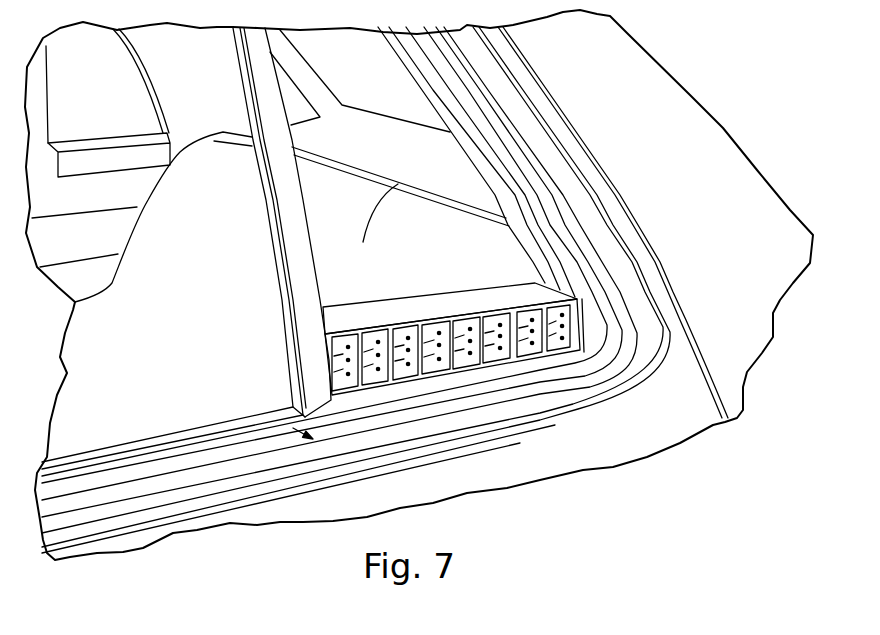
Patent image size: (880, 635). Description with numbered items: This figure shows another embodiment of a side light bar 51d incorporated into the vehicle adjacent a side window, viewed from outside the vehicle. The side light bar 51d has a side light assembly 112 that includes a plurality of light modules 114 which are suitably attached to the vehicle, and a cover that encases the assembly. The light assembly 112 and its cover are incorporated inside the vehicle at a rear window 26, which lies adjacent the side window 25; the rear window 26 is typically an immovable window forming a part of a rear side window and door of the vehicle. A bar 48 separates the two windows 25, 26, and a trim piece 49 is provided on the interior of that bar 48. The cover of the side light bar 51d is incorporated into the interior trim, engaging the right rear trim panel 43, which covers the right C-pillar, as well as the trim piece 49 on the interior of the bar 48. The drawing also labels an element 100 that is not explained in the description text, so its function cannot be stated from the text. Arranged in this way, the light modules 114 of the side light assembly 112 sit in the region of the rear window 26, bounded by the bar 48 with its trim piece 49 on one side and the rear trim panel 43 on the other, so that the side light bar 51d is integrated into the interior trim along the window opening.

The side window 25 is at (102, 317).
The rear window 26 is at (70, 59).
The right rear trim panel 43 is at (212, 83).
The bar 48 is at (300, 268).
The trim piece 49 is at (285, 328).
The side light bar 51d is at (451, 255).
The power strip assembly 100 is at (118, 143).
The side light assembly 112 is at (83, 128).
The light modules 114 is at (345, 383).